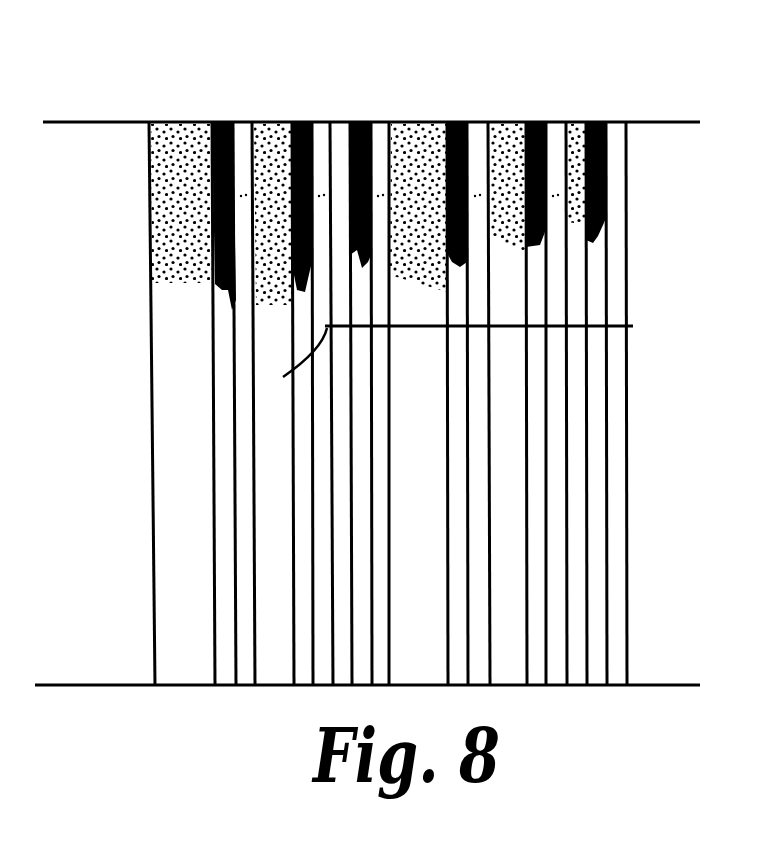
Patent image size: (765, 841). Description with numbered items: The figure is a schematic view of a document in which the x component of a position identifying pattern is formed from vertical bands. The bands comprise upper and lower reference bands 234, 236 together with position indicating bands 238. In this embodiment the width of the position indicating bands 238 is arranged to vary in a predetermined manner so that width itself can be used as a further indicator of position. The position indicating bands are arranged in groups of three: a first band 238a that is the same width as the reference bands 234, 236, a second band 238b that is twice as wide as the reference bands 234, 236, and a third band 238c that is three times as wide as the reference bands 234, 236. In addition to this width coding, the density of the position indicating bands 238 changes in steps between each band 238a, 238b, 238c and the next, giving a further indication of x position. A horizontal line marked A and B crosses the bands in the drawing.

The upper reference band 234 is at (218, 122).
The lower reference band 236 is at (242, 137).
The position indicating band 238 is at (273, 140).
The first band 238a is at (572, 140).
The second band 238b is at (505, 135).
The third band 238c is at (413, 140).
The section line end A is at (490, 327).
The section line end B is at (293, 362).